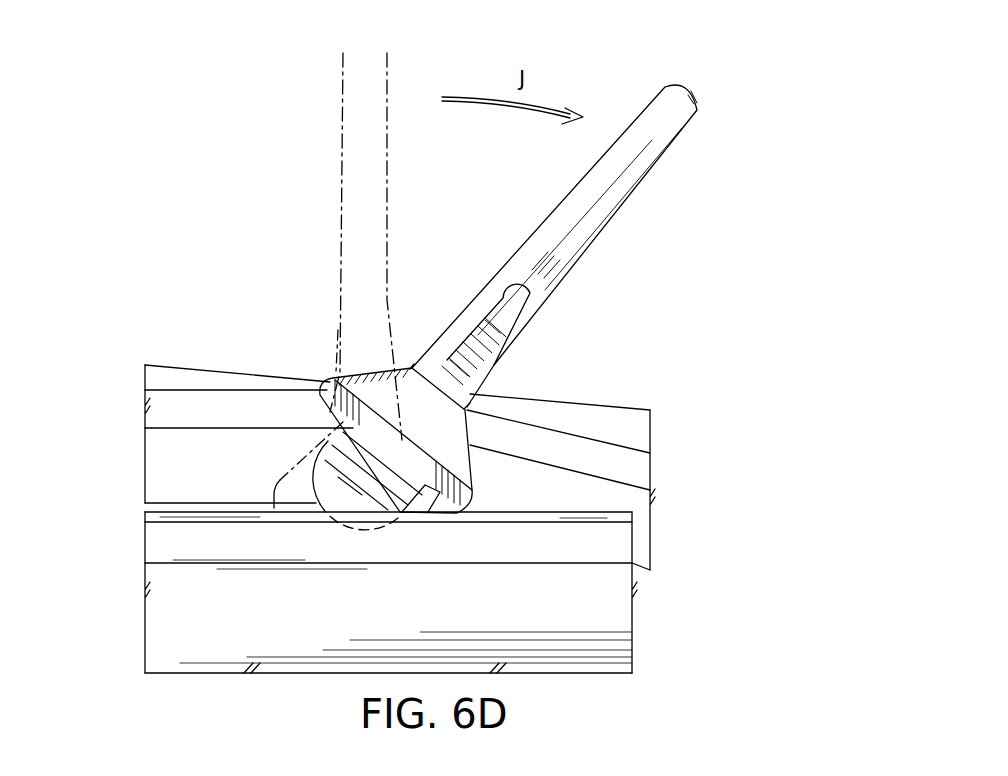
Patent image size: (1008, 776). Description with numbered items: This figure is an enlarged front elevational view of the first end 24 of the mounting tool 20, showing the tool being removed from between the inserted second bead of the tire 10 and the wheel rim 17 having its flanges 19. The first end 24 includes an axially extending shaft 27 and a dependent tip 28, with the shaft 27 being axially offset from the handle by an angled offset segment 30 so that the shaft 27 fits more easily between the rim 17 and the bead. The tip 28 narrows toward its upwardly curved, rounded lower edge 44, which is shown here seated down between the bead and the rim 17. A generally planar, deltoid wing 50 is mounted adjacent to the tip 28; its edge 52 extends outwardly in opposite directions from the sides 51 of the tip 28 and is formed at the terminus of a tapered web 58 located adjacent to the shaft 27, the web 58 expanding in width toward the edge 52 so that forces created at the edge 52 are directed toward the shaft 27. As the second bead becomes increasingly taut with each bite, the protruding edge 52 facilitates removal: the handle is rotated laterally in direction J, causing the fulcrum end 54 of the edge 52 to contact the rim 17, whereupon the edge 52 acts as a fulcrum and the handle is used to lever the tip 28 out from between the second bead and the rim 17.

The tire 10 is at (169, 354).
The wheel rim 17 is at (624, 501).
The flanges 19 is at (612, 543).
The mounting tool 20 is at (327, 95).
The first end 24 is at (350, 328).
The shaft 27 is at (463, 291).
The tip 28 is at (313, 432).
The offset segment 30 is at (612, 201).
The lower edge 44 is at (318, 510).
The wing 50 is at (372, 359).
The sides of tip 51 is at (411, 366).
The edge 52 is at (424, 492).
The fulcrum end 54 is at (335, 412).
The tapered web 58 is at (450, 432).